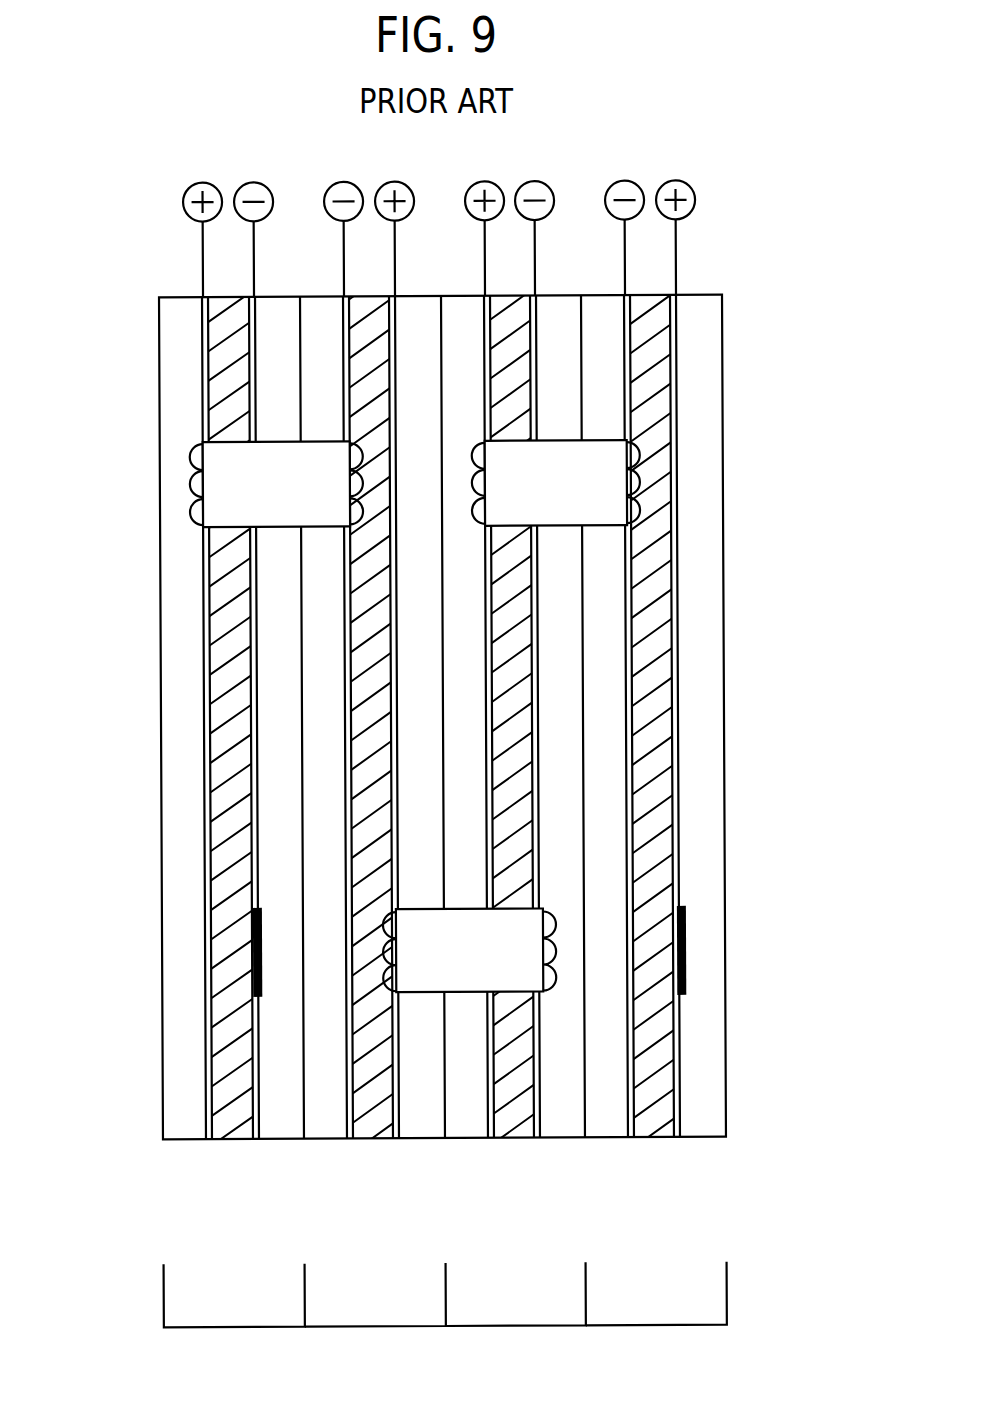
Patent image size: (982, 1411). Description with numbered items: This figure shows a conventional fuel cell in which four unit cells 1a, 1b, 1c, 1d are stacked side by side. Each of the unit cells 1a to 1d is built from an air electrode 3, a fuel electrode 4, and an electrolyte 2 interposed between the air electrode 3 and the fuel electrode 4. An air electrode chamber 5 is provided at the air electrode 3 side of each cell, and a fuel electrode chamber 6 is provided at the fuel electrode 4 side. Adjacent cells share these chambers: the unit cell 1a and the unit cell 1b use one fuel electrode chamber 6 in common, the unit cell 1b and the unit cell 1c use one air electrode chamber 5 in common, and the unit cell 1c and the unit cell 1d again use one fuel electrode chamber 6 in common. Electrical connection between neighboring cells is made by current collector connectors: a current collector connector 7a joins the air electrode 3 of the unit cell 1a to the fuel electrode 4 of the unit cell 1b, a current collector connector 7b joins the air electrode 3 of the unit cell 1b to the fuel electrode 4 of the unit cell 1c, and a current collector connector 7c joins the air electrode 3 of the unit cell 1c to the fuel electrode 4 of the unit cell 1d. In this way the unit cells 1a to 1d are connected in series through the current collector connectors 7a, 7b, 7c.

The unit cell 1a is at (231, 754).
The unit cell 1b is at (372, 753).
The unit cell 1c is at (512, 753).
The unit cell 1d is at (653, 752).
The electrolyte 2 is at (218, 617).
The air electrode 3 is at (207, 582).
The fuel electrode 4 is at (260, 680).
The air electrode chamber 5 is at (181, 374).
The fuel electrode chamber 6 is at (273, 735).
The current collector connector 7a is at (220, 497).
The current collector connector 7b is at (518, 955).
The current collector connector 7c is at (588, 495).